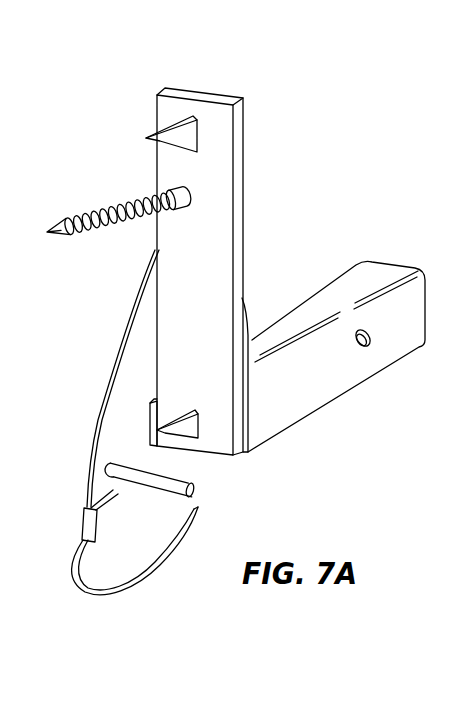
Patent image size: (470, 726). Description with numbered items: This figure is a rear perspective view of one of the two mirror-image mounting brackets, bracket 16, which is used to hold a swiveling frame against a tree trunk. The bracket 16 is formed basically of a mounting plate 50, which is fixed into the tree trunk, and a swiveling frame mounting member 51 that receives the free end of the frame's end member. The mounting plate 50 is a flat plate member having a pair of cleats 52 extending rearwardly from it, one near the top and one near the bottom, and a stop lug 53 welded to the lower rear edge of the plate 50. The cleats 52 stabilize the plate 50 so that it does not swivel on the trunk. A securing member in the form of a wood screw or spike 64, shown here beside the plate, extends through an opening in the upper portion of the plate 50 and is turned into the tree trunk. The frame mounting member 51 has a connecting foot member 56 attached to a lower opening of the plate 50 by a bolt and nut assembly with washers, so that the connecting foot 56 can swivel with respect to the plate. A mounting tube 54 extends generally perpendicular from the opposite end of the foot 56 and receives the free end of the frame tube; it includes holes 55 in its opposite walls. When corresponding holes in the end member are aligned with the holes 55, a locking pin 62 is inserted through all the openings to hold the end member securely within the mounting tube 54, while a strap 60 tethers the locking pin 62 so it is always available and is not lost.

The bracket 16 is at (322, 128).
The mounting plate 50 is at (222, 232).
The frame mounting member 51 is at (345, 427).
The cleats 52 is at (178, 137).
The stop lug 53 is at (148, 410).
The mounting tube 54 is at (322, 294).
The holes 55 is at (370, 343).
The connecting foot member 56 is at (250, 342).
The strap 60 is at (132, 373).
The locking pin 62 is at (170, 483).
The wood screw or spike 64 is at (110, 207).